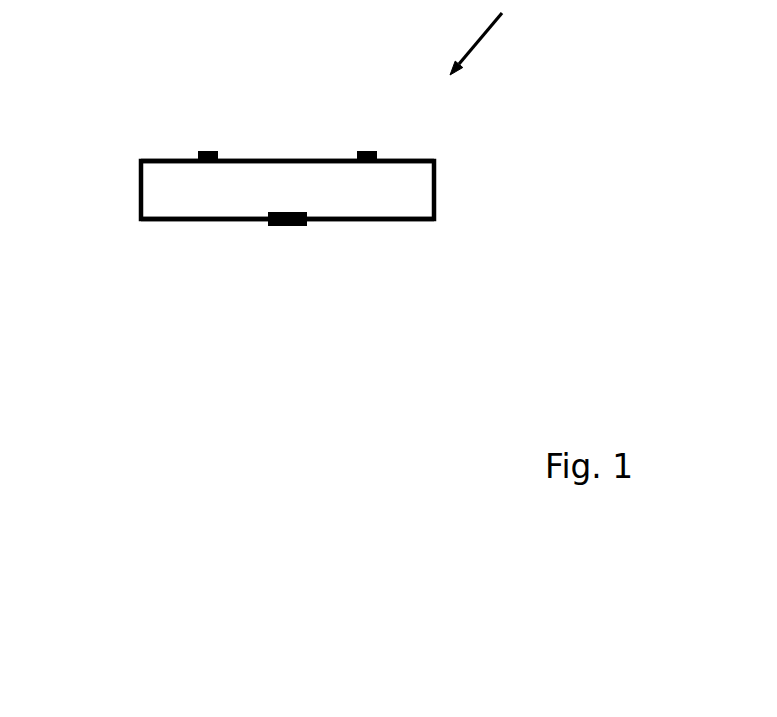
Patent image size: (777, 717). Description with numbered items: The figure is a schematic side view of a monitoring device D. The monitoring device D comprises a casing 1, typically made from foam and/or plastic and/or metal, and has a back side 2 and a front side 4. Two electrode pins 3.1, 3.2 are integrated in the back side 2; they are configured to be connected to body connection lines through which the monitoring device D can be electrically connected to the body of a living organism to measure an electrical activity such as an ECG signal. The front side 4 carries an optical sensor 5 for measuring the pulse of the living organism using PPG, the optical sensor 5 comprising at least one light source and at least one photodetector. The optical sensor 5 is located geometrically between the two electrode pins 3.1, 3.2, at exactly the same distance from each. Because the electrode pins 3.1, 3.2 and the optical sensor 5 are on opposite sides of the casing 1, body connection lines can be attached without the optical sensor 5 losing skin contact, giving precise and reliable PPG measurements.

The casing 1 is at (435, 188).
The back side 2 is at (156, 157).
The first electrode pin 3.1 is at (205, 152).
The second electrode pin 3.2 is at (365, 152).
The front side 4 is at (192, 221).
The optical sensor 5 is at (285, 225).
The monitoring device D is at (492, 37).